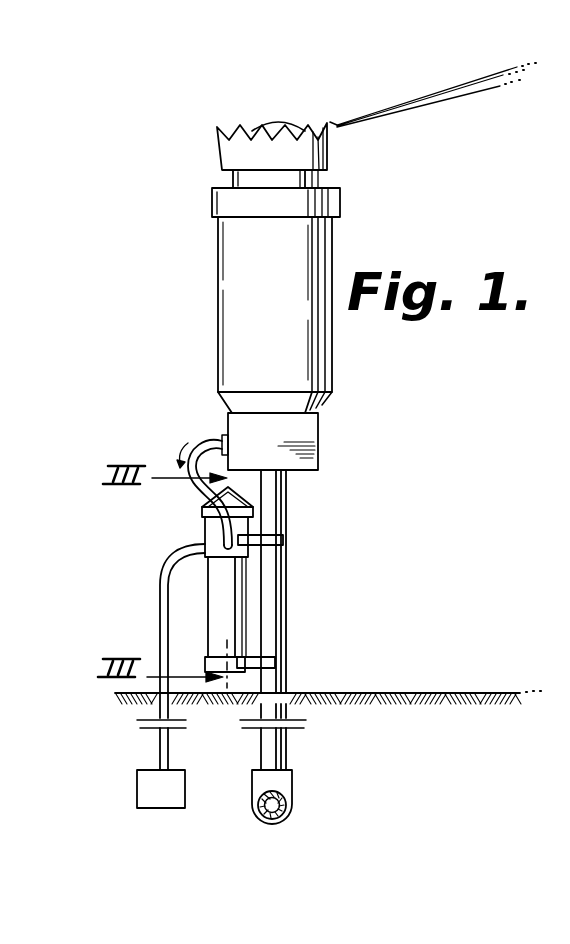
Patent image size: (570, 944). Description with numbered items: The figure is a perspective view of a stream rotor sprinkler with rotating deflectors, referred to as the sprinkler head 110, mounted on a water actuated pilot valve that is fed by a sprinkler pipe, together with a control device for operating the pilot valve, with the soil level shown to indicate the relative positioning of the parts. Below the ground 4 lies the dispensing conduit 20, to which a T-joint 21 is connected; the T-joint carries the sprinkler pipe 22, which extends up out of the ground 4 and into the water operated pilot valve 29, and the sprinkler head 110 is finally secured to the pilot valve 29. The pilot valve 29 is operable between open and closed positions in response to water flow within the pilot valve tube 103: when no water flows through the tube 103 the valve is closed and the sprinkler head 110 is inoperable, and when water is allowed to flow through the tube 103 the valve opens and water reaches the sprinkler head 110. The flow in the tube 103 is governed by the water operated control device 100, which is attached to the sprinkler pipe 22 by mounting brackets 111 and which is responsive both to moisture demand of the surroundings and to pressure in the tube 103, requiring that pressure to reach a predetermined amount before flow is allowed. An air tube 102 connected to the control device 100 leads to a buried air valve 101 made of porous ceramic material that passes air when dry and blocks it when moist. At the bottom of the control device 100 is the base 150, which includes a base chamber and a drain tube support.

The sprinkler head 110 is at (350, 245).
The water operated pilot valve 29 is at (297, 432).
The pilot valve tube 103 is at (203, 440).
The water operated control device 100 is at (195, 521).
The base 150 is at (232, 573).
The mounting brackets 111 is at (284, 530).
The sprinkler pipe 22 is at (287, 613).
The air tube 102 is at (162, 615).
The air valve 101 is at (175, 782).
The T-joint 21 is at (294, 782).
The dispensing conduit 20 is at (290, 807).
The ground 4 is at (423, 693).